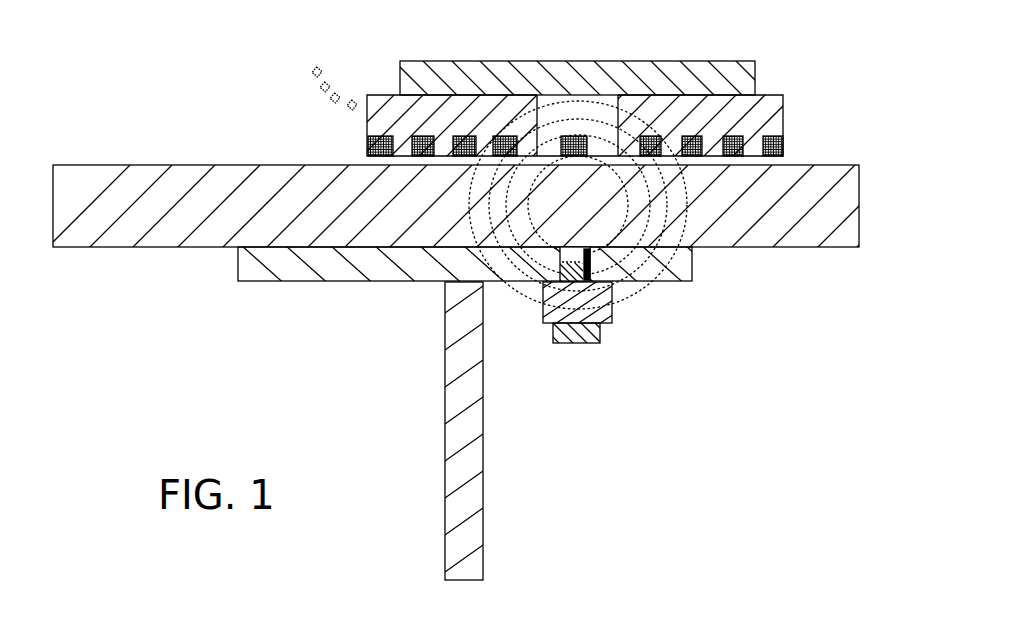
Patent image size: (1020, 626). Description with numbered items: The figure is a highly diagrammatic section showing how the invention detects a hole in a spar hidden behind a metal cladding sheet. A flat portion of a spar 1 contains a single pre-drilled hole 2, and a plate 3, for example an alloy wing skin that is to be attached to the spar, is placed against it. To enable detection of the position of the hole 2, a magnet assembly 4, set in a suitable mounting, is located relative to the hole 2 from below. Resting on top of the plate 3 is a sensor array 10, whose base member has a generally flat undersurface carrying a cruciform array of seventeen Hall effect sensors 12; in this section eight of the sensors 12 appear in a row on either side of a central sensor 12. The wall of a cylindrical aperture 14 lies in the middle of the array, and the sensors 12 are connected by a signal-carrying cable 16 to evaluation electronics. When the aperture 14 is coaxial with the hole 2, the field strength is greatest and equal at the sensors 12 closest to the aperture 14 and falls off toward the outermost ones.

The spar 1 is at (437, 349).
The hole 2 is at (604, 264).
The plate 3 is at (73, 165).
The magnet assembly 4 is at (573, 345).
The sensor array 10 is at (381, 70).
The Hall effect sensors 12 is at (368, 143).
The wall of cylindrical aperture 14 is at (612, 147).
The signal-carrying cable 16 is at (312, 72).